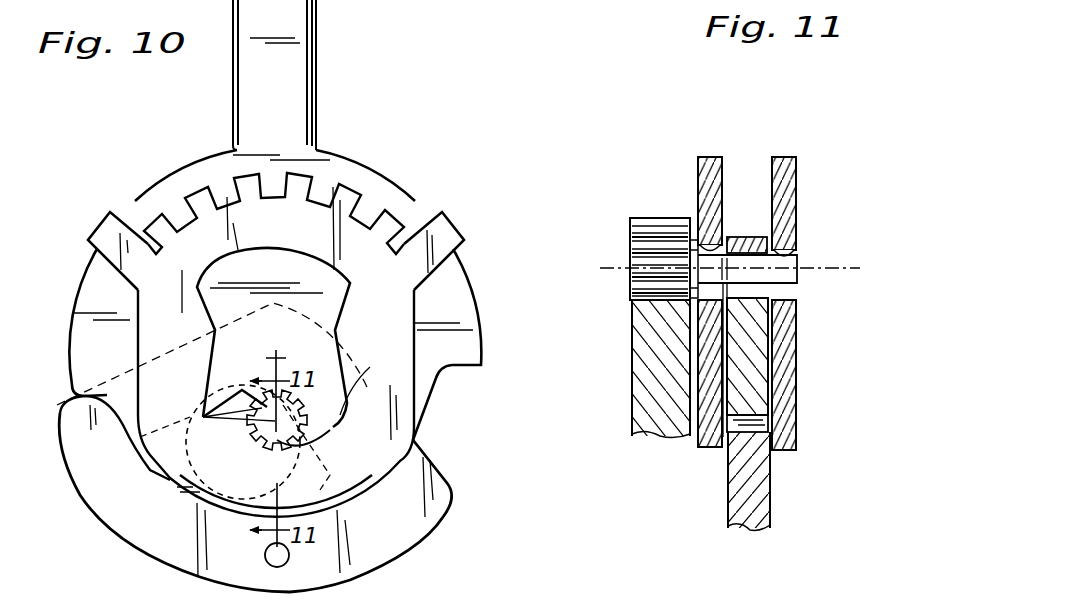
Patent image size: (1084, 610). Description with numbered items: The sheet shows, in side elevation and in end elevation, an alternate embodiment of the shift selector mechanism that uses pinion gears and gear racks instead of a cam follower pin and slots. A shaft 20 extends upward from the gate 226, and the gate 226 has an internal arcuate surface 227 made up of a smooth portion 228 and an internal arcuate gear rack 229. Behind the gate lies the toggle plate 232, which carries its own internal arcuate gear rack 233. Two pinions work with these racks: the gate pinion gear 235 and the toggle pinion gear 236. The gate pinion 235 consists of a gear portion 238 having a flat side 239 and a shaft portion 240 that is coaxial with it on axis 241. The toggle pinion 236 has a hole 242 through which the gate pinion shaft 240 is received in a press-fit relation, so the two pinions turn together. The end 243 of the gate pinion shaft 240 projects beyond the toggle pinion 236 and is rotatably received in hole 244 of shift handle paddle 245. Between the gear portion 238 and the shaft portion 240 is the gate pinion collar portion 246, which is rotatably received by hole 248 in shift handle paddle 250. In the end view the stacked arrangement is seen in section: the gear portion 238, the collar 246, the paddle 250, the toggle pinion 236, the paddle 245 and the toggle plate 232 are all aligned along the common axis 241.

In FIG. 10, the shaft 20 is at (303, 66).
In FIG. 10, the gate 226 is at (393, 313).
In FIG. 11, the gate 226 is at (628, 380).
In FIG. 10, the internal arcuate surface 227 is at (325, 418).
In FIG. 10, the smooth portion 228 is at (363, 388).
In FIG. 10, the internal arcuate gear rack 229 is at (212, 414).
In FIG. 10, the toggle plate 232 is at (421, 512).
In FIG. 11, the toggle plate 232 is at (768, 505).
In FIG. 10, the internal arcuate gear rack 233 is at (150, 437).
In FIG. 11, the internal arcuate gear rack 233 is at (768, 443).
In FIG. 11, the gate pinion gear 235 is at (626, 251).
In FIG. 10, the toggle pinion gear 236 is at (167, 470).
In FIG. 11, the toggle pinion gear 236 is at (747, 233).
In FIG. 10, the gear portion 238 is at (243, 442).
In FIG. 11, the gear portion 238 is at (653, 227).
In FIG. 10, the flat side 239 is at (300, 446).
In FIG. 11, the flat side 239 is at (650, 303).
In FIG. 11, the shaft portion 240 is at (772, 298).
In FIG. 10, the axis 241 is at (212, 396).
In FIG. 11, the axis 241 is at (840, 270).
In FIG. 11, the hole 242 is at (770, 247).
In FIG. 11, the shaft 243 is at (800, 265).
In FIG. 11, the hole 244 is at (793, 285).
In FIG. 11, the shift handle paddle 245 is at (800, 426).
In FIG. 11, the gate pinion collar portion 246 is at (717, 300).
In FIG. 11, the hole 248 is at (707, 237).
In FIG. 11, the shift handle paddle 250 is at (700, 440).